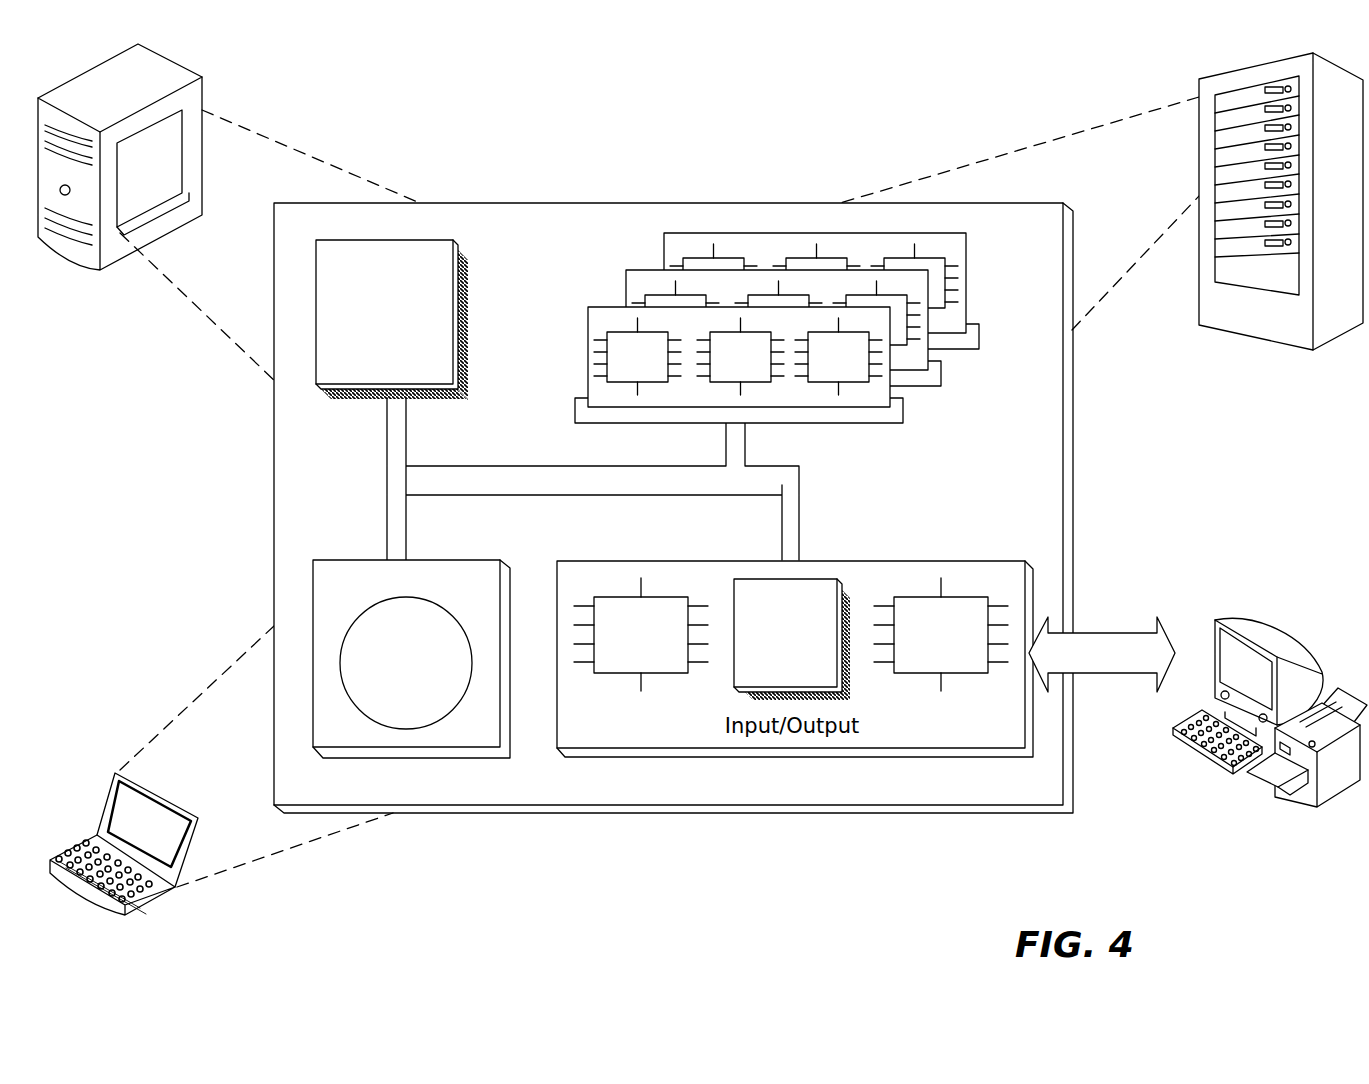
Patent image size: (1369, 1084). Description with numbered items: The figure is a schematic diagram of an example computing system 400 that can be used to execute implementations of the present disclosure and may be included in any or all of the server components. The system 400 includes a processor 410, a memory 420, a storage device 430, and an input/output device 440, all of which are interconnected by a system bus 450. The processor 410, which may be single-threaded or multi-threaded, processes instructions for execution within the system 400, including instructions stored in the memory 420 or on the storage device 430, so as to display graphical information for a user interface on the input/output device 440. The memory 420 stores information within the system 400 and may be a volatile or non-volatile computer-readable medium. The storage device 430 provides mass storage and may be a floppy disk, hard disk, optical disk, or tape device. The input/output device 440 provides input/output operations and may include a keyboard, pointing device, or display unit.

The computing system 400 is at (484, 116).
The processor 410 is at (440, 377).
The memory 420 is at (970, 384).
The storage device 430 is at (489, 740).
The input/output device 440 is at (1212, 623).
The system bus 450 is at (590, 485).